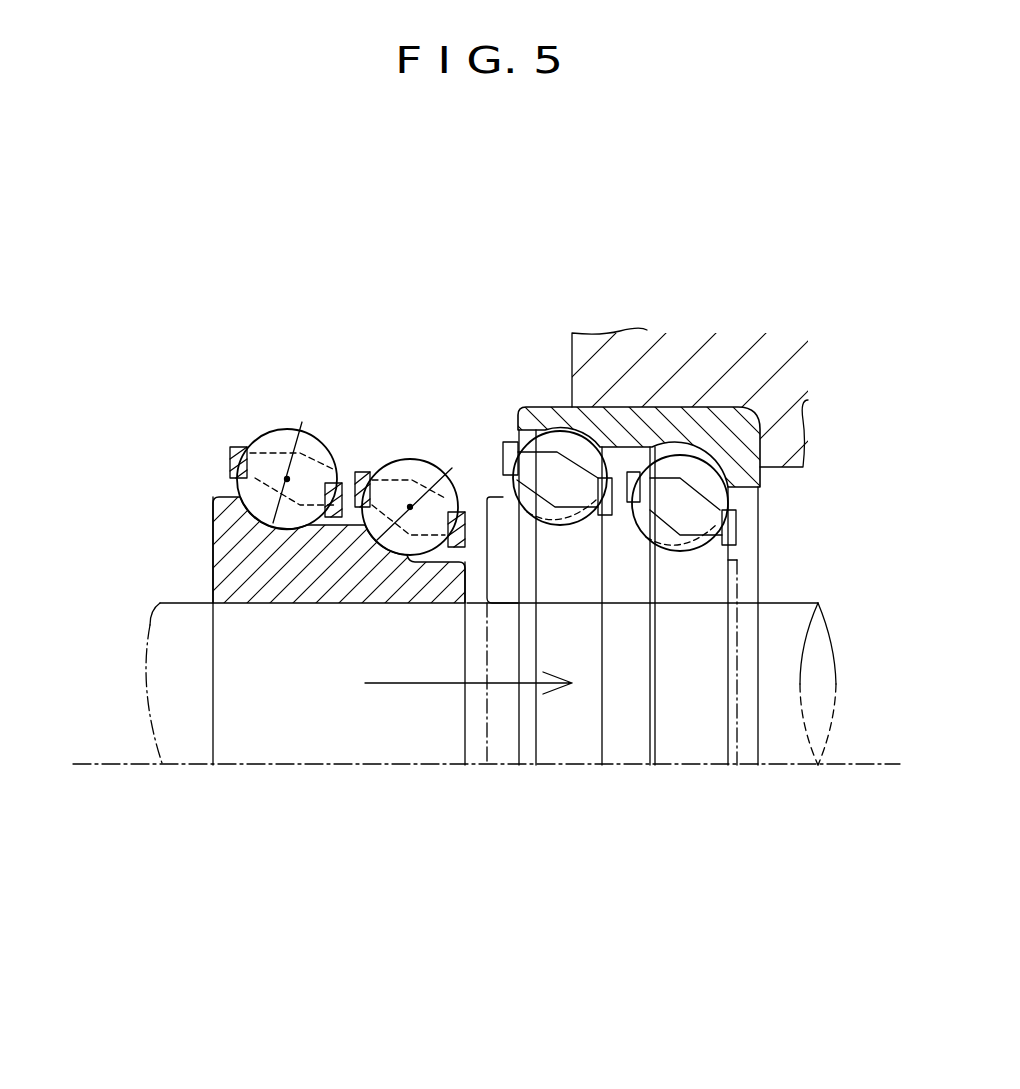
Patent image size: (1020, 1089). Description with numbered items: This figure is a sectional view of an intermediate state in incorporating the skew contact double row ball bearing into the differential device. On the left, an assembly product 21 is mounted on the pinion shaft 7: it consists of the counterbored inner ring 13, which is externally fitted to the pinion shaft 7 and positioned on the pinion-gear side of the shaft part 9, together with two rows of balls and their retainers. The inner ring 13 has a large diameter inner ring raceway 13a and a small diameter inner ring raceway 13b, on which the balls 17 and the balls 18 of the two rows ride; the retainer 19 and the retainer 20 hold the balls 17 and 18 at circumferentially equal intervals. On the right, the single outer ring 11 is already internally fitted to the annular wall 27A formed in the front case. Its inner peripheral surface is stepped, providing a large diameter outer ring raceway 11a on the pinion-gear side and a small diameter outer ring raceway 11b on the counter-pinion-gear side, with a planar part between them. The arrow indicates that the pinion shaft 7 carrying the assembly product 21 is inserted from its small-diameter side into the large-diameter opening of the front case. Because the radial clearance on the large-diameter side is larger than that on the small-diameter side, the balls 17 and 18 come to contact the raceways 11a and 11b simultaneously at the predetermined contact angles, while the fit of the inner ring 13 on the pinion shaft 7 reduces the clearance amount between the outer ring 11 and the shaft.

The assembly product 21 is at (176, 328).
The inner ring 13 is at (213, 563).
The large diameter inner ring raceway 13a is at (293, 527).
The small diameter inner ring raceway 13b is at (397, 555).
The ball 17 is at (287, 437).
The ball 18 is at (413, 458).
The retainer 19 is at (232, 461).
The retainer 20 is at (357, 472).
The annular wall 27A is at (620, 342).
The outer ring 11 is at (736, 412).
The large diameter outer ring raceway 11a is at (531, 408).
The small diameter outer ring raceway 11b is at (742, 529).
The shaft part 9 is at (680, 732).
The pinion shaft 7 is at (310, 733).